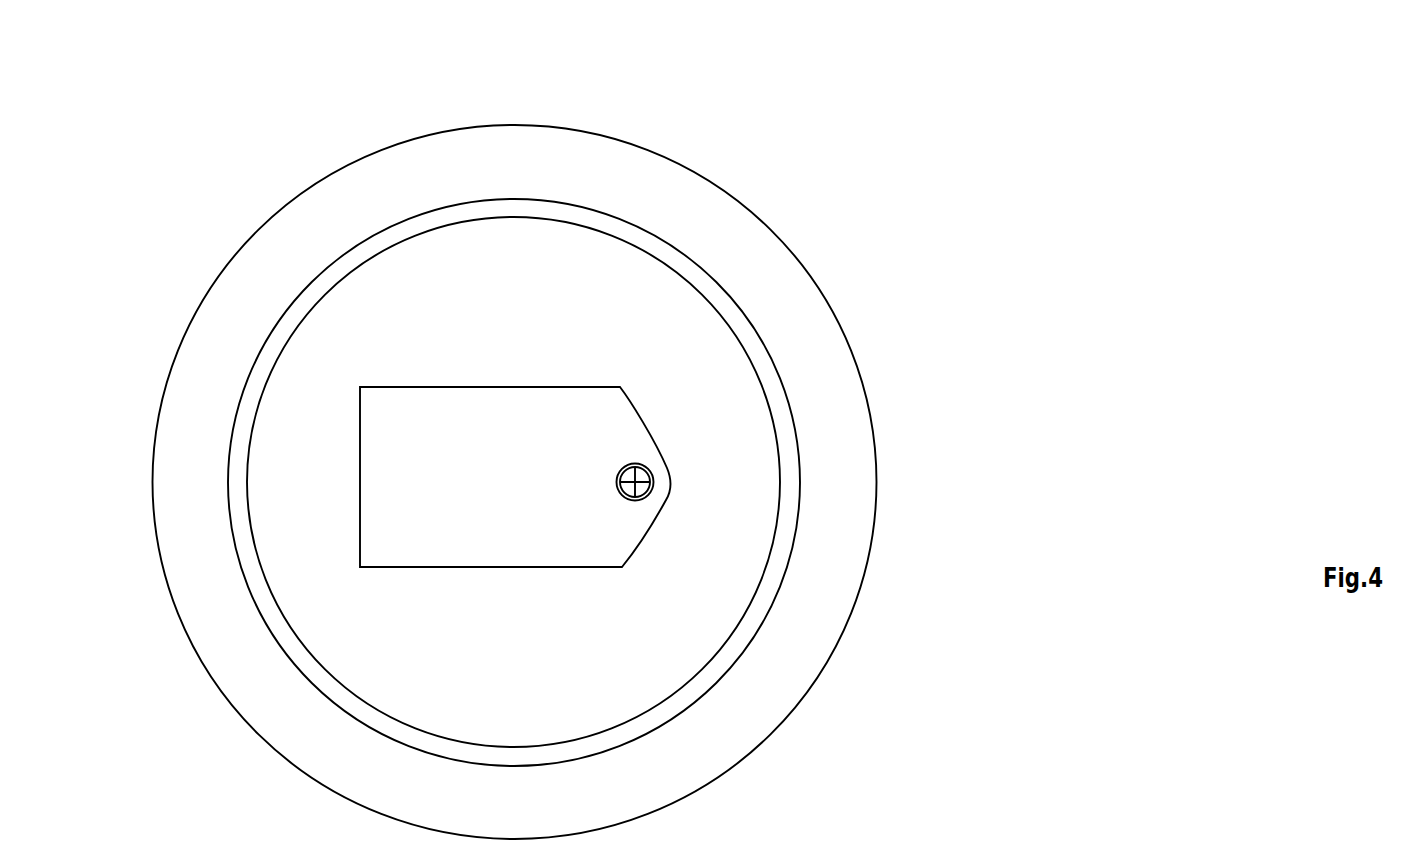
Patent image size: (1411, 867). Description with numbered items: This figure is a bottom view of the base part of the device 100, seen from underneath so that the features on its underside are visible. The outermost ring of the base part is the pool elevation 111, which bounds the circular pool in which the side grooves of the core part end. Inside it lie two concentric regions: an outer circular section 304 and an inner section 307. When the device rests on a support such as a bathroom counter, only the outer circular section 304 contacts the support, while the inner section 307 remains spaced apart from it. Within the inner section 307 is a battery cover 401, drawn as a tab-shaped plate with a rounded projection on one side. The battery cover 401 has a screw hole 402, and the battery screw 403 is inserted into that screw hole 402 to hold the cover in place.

The pin reader device 100 is at (228, 63).
The pool elevation 111 is at (770, 227).
The outer circular section 304 is at (768, 287).
The inner section 307 is at (710, 370).
The battery cover 401 is at (603, 435).
The screw hole 402 is at (657, 478).
The battery screw 403 is at (643, 487).